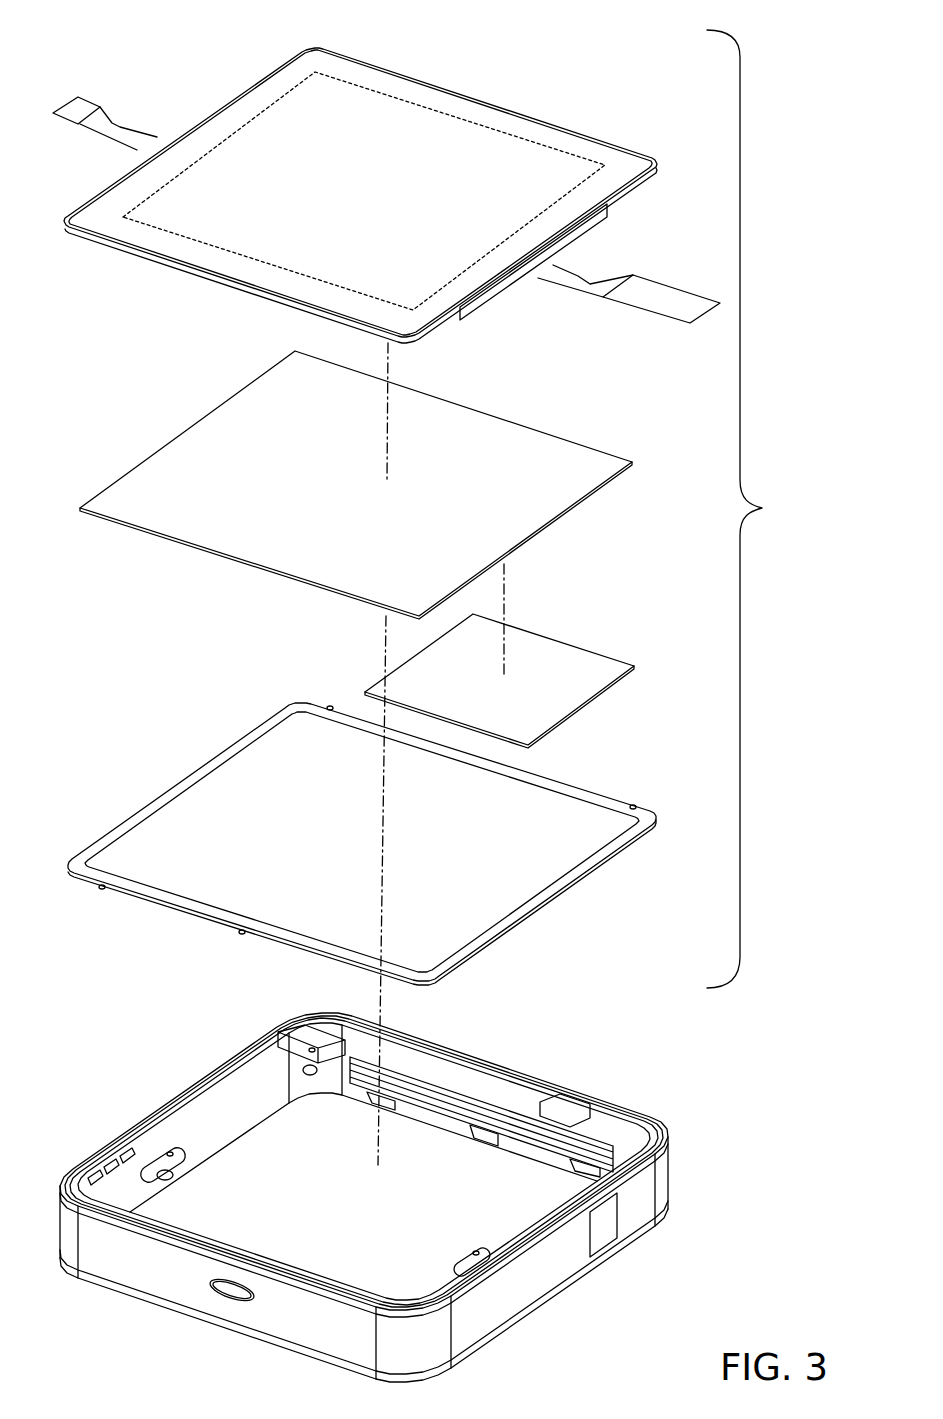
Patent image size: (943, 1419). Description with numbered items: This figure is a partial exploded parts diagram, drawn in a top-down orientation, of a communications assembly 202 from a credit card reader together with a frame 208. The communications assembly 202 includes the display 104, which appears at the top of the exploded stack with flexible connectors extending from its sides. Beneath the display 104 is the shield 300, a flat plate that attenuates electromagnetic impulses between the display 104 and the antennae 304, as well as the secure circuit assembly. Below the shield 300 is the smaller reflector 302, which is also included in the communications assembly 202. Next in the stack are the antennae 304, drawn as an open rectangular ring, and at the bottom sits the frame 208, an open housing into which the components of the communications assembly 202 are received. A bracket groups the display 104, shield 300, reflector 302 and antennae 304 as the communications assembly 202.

The display 104 is at (240, 114).
The communications assembly 202 is at (762, 508).
The frame 208 is at (205, 1118).
The shield 300 is at (188, 458).
The reflector 302 is at (543, 662).
The antennae 304 is at (183, 787).